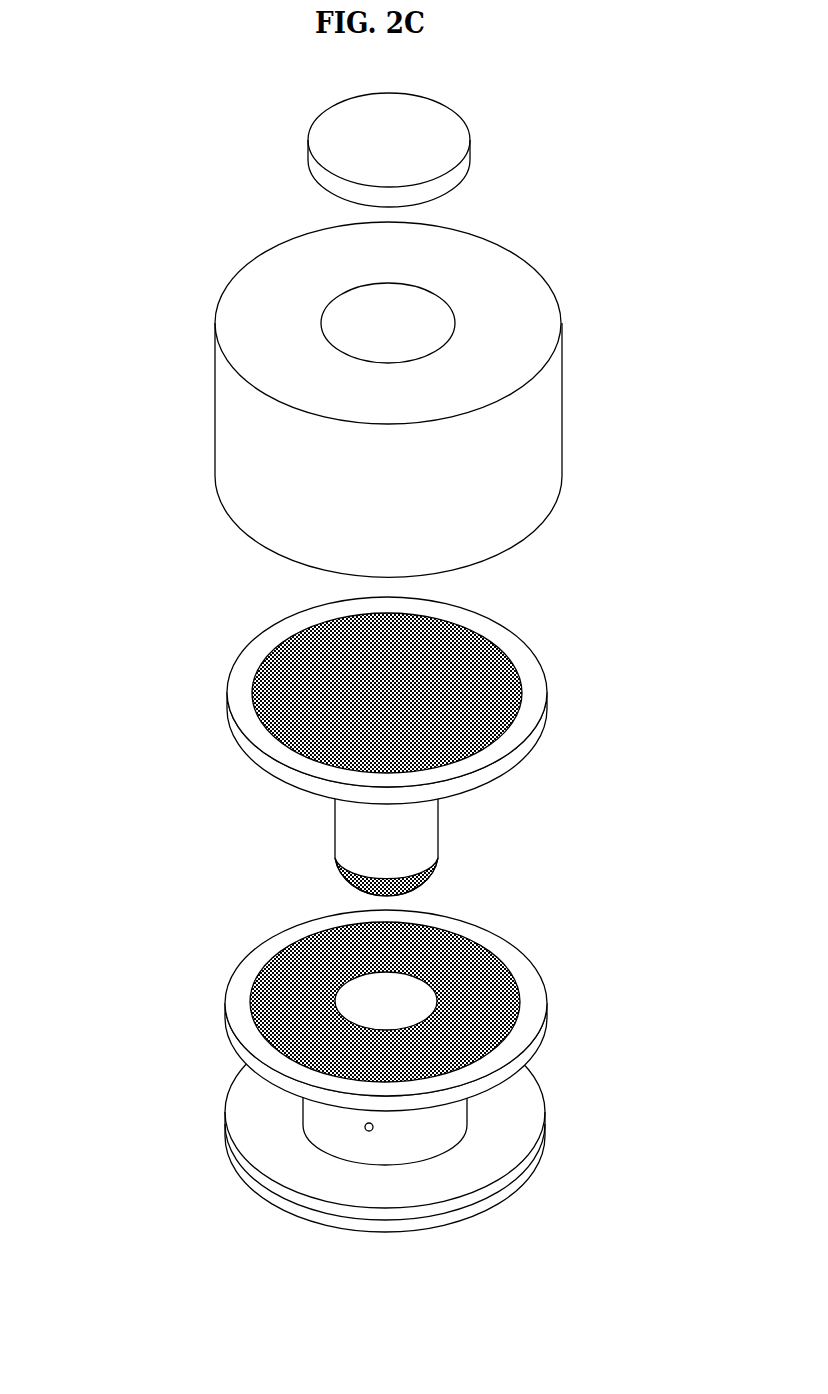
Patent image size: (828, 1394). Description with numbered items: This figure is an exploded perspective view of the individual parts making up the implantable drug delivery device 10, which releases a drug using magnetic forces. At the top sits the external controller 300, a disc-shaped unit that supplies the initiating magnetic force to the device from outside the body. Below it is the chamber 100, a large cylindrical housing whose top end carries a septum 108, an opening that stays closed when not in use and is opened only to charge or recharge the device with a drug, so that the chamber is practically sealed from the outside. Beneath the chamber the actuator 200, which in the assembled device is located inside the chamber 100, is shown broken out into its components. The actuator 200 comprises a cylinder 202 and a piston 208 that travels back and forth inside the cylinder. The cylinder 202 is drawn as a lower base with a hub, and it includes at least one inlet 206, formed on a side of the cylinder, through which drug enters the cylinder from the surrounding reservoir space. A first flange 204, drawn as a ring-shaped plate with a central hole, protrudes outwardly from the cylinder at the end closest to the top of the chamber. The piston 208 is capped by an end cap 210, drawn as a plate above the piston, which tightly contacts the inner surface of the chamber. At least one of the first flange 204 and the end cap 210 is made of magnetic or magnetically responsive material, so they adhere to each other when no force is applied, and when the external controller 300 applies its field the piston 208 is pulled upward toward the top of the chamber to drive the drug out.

The device 10 is at (586, 278).
The chamber 100 is at (427, 399).
The septum 108 is at (433, 325).
The actuator 200 is at (160, 715).
The cylinder 202 is at (351, 1124).
The first flange 204 is at (247, 966).
The inlet 206 is at (364, 1127).
The piston 208 is at (352, 833).
The end cap 210 is at (247, 730).
The external controller 300 is at (458, 143).